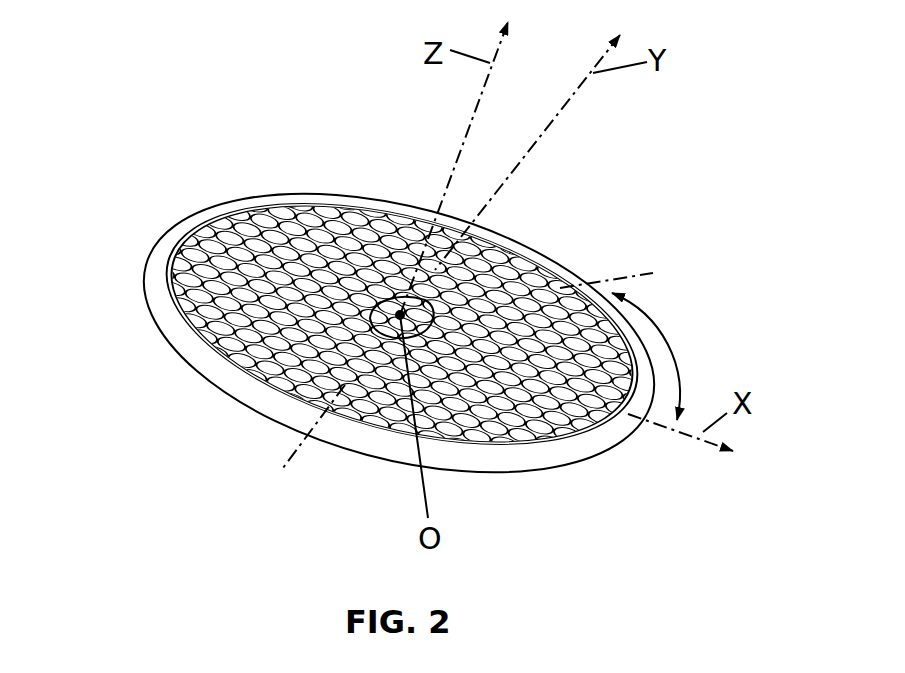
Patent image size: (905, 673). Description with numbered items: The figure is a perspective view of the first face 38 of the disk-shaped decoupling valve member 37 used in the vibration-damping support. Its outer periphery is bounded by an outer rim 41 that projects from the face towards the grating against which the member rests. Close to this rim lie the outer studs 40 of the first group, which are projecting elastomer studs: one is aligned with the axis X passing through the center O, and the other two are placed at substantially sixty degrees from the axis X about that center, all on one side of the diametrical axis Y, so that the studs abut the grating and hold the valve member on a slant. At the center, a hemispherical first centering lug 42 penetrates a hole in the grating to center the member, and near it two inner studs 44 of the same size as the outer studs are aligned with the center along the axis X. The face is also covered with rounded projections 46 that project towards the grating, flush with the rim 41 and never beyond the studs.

The decoupling valve member 37 is at (614, 266).
The first face 38 is at (425, 232).
The outer studs 40 is at (565, 282).
The outer rim 41 is at (163, 245).
The first centering lug 42 is at (297, 387).
The inner studs 44 is at (243, 356).
The rounded projections 46 is at (282, 208).